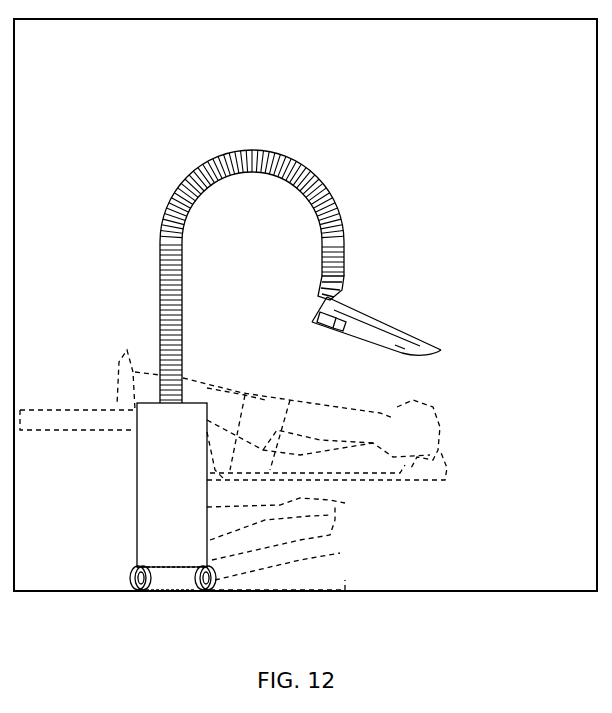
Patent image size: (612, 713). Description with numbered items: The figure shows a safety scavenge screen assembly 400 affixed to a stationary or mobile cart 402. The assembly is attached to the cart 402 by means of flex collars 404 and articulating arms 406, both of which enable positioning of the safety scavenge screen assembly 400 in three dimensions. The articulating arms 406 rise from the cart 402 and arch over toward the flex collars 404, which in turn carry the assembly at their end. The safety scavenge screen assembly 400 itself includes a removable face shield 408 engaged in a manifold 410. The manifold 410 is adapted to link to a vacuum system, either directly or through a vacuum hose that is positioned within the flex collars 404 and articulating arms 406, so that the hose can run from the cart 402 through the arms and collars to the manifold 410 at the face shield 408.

The safety scavenge screen assembly 400 is at (376, 300).
The stationary or mobile cart 402 is at (173, 520).
The flex collars 404 is at (342, 278).
The articulating arms 406 is at (300, 161).
The removable face shield 408 is at (397, 340).
The manifold 410 is at (347, 331).